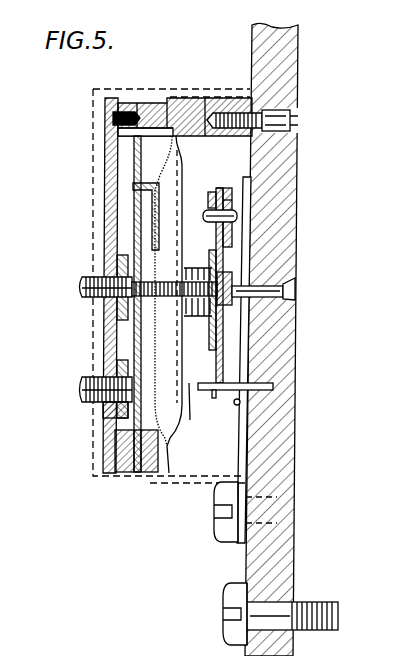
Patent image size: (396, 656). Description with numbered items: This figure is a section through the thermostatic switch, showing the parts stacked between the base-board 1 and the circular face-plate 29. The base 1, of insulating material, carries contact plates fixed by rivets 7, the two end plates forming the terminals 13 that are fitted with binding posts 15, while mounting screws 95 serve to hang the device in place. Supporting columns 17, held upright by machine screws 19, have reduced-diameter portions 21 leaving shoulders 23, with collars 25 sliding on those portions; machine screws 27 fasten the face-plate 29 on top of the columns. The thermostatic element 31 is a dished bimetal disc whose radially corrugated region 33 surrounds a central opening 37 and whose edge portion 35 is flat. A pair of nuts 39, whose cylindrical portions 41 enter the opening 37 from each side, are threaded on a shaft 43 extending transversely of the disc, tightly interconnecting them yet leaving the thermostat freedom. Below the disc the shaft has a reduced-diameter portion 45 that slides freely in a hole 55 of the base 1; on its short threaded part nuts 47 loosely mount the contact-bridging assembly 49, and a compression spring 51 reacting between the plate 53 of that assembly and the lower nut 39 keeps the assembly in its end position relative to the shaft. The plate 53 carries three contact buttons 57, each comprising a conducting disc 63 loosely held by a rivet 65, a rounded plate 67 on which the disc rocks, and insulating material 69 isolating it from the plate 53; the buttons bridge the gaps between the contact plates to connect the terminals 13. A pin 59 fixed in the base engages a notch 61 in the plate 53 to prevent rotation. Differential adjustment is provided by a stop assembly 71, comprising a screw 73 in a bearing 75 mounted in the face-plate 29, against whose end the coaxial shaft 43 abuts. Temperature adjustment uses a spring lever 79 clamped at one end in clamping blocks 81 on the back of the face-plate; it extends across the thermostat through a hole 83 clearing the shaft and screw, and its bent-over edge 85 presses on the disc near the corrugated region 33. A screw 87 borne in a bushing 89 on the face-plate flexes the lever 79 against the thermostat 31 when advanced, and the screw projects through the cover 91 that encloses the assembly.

The base-board 1 is at (285, 452).
The rivets 7 is at (240, 402).
The terminal plates 13 is at (241, 541).
The binding posts 15 is at (214, 536).
The mounting columns 17 is at (203, 112).
The machine screws 19 is at (292, 110).
The reduced-diameter portions 21 is at (160, 110).
The shoulders 23 is at (176, 101).
The collars 25 is at (137, 103).
The machine screws 27 is at (112, 118).
The face-plate 29 is at (110, 192).
The thermostatic element 31 is at (181, 420).
The corrugated region 33 is at (136, 222).
The edge portion 35 is at (180, 112).
The central opening 37 is at (150, 326).
The nuts 39 is at (182, 267).
The cylindrical portions 41 is at (130, 303).
The shaft 43 is at (228, 300).
The reduced-diameter portion 45 is at (263, 301).
The nuts 47 is at (293, 280).
The contact-bridging assembly 49 is at (222, 250).
The compression spring 51 is at (212, 307).
The plate 53 is at (216, 368).
The hole 55 is at (290, 297).
The contact buttons 57 is at (226, 205).
The pin 59 is at (272, 386).
The notch 61 is at (214, 398).
The disc 63 is at (226, 192).
The rivet 65 is at (237, 216).
The rounded plate 67 is at (222, 190).
The insulating material 69 is at (212, 192).
The stop assembly 71 is at (60, 286).
The screw 73 is at (80, 272).
The bearing 75 is at (120, 262).
The spring lever 79 is at (132, 343).
The clamping blocks 81 is at (146, 473).
The hole 83 is at (156, 262).
The bent-over edge 85 is at (157, 183).
The screw 87 is at (82, 402).
The bushing 89 is at (113, 413).
The cover 91 is at (93, 480).
The mounting screws 95 is at (223, 628).